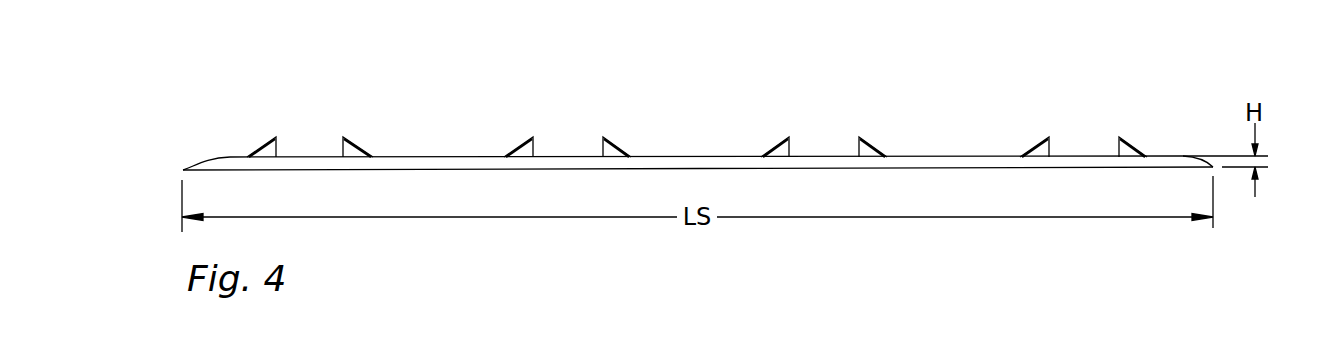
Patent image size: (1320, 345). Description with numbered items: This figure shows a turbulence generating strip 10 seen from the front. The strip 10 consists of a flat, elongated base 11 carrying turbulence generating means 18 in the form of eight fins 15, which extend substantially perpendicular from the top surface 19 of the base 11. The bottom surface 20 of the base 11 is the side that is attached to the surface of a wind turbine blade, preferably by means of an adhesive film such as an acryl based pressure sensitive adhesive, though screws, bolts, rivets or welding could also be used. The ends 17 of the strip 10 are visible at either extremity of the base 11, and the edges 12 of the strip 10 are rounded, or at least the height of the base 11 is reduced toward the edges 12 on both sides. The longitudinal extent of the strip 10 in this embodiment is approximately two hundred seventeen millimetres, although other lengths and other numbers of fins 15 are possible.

The turbulence generating strip 10 is at (206, 107).
The base 11 is at (675, 163).
The edges 12 is at (194, 162).
The fins 15 is at (353, 148).
The ends 17 is at (183, 170).
The turbulence generating means 18 is at (868, 148).
The top surface 19 is at (1068, 154).
The bottom surface 20 is at (1080, 168).